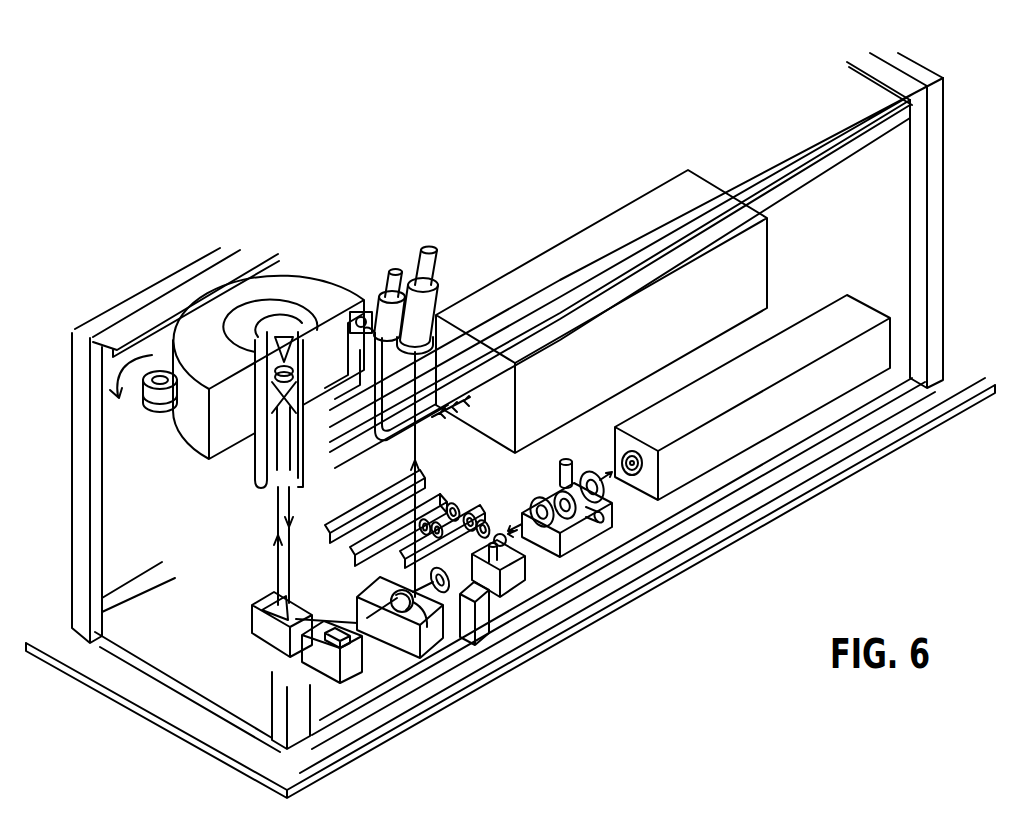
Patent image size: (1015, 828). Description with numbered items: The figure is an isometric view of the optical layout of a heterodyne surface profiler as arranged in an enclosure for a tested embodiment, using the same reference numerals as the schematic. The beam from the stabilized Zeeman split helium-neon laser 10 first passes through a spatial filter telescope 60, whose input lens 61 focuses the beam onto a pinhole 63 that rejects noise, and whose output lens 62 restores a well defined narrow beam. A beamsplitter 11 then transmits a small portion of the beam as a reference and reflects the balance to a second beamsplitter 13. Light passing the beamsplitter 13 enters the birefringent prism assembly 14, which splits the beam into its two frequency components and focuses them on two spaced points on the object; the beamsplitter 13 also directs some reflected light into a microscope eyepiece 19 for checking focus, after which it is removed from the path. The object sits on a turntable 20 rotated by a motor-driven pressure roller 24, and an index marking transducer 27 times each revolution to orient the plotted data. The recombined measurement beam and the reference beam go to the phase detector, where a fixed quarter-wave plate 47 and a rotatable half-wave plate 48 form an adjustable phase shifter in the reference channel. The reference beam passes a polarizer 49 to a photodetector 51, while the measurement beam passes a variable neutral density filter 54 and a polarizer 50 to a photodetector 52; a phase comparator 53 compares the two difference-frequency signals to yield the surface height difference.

The laser 10 is at (871, 316).
The beamsplitter 11 is at (560, 535).
The second beamsplitter 13 is at (383, 591).
The birefringent prism assembly 14 is at (250, 373).
The microscope eyepiece 19 is at (445, 262).
The turntable 20 is at (245, 331).
The pressure roller 24 is at (150, 410).
The index marking transducer 27 is at (379, 340).
The fixed quarter-wave plate 47 is at (496, 528).
The rotatable half-wave plate 48 is at (474, 519).
The polarizer 49 is at (457, 505).
The polarizer 50 is at (413, 540).
The photodetector 51 is at (427, 488).
The photodetector 52 is at (358, 528).
The phase comparator 53 is at (534, 440).
The variable neutral density filter 54 is at (466, 562).
The spatial filter telescope 60 is at (586, 454).
The input lens 61 is at (606, 513).
The output lens 62 is at (548, 540).
The pinhole 63 is at (569, 536).